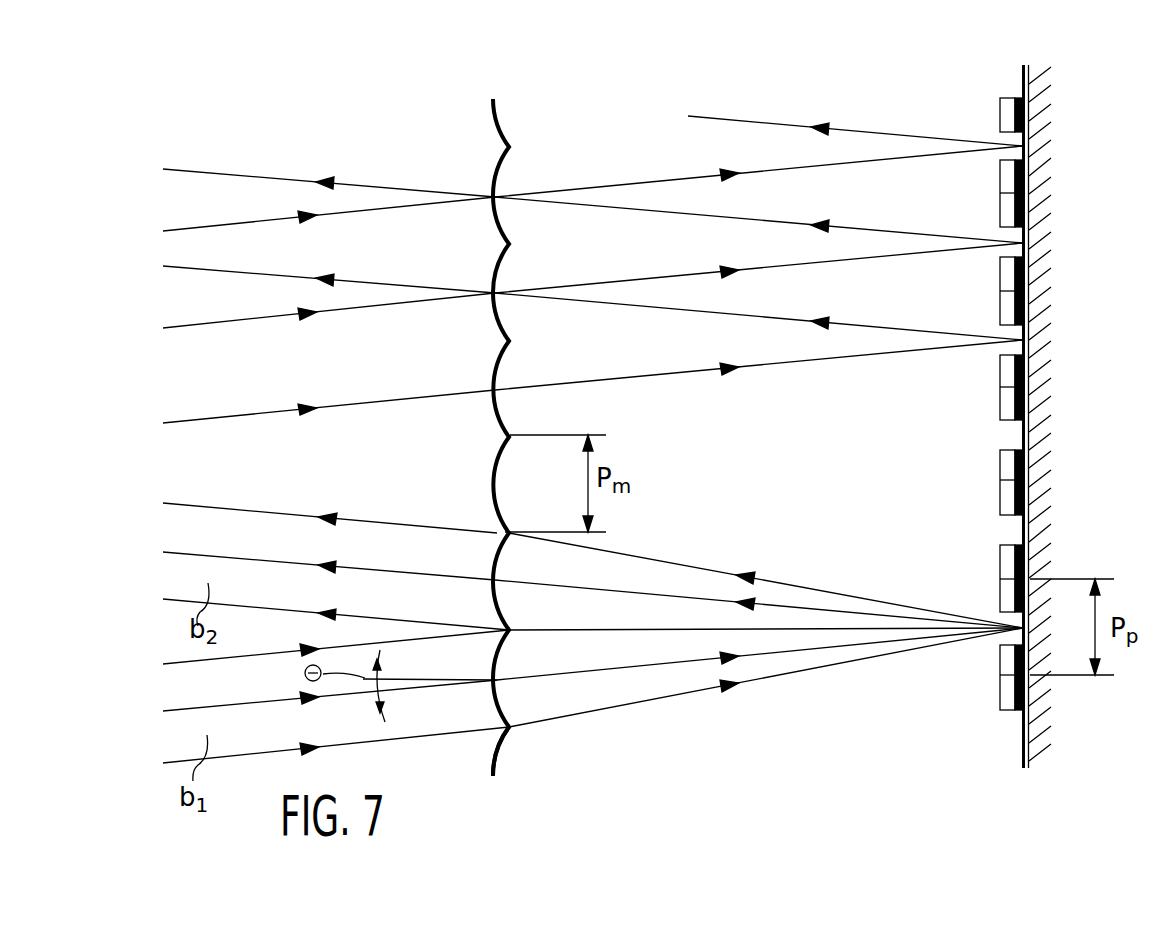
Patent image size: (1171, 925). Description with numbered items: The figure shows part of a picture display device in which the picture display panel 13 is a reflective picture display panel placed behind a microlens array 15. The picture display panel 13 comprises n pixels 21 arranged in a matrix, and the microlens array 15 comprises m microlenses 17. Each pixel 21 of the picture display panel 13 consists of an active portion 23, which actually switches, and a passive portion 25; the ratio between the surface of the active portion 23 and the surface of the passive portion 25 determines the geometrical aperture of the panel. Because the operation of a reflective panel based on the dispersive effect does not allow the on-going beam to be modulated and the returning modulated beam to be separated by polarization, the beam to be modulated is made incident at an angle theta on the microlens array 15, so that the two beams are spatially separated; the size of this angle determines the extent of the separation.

The picture display panel 13 is at (1025, 783).
The microlens array 15 is at (512, 87).
The microlens 17 is at (493, 757).
The pixel 21 is at (1007, 435).
The active portion 23 is at (1007, 432).
The passive portion 25 is at (1007, 405).